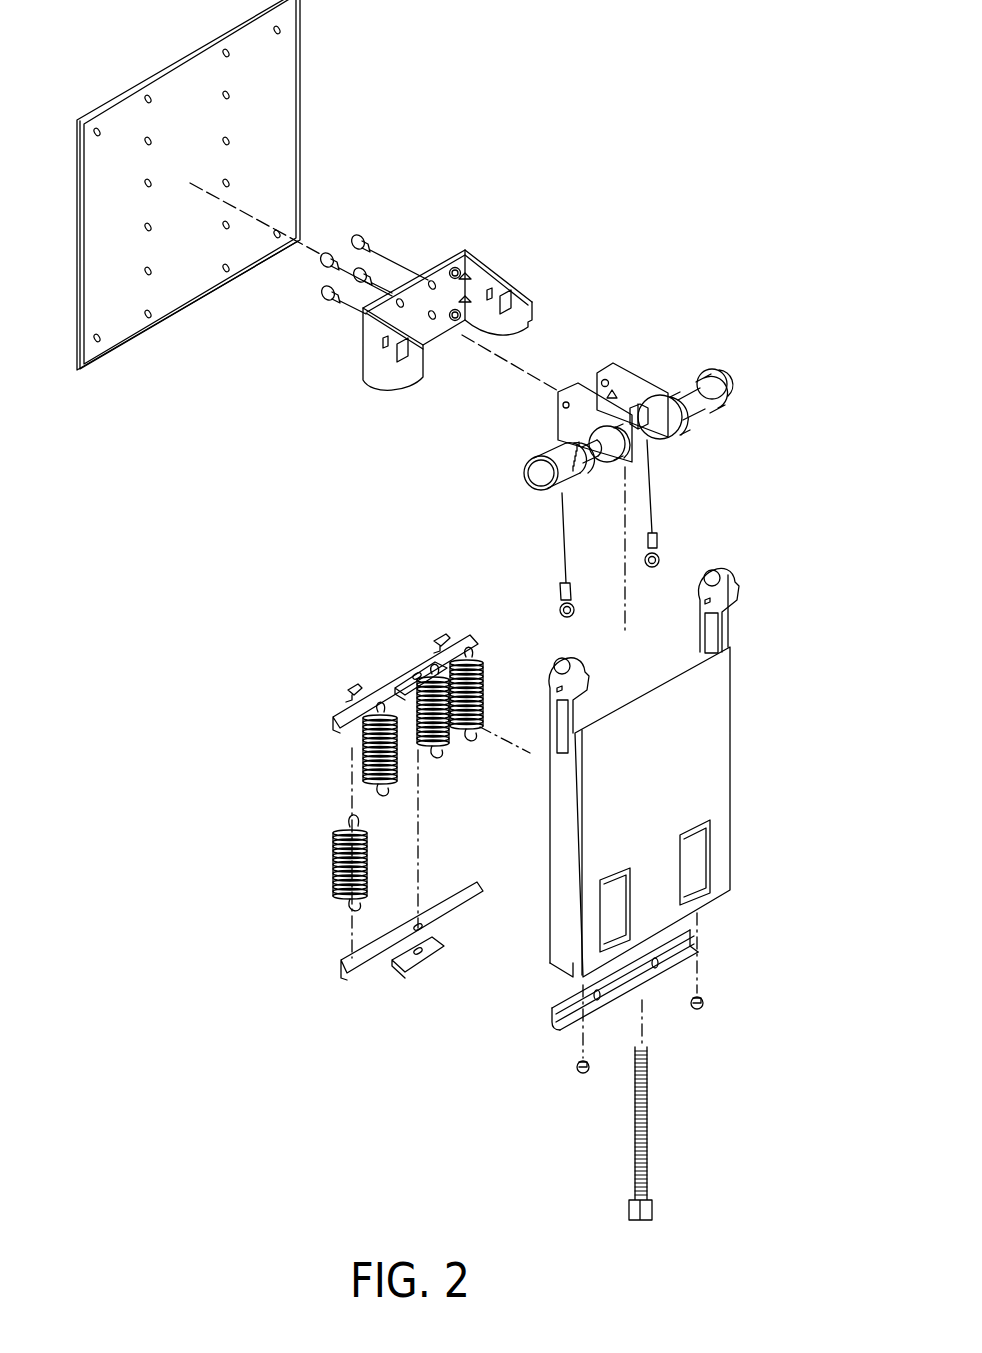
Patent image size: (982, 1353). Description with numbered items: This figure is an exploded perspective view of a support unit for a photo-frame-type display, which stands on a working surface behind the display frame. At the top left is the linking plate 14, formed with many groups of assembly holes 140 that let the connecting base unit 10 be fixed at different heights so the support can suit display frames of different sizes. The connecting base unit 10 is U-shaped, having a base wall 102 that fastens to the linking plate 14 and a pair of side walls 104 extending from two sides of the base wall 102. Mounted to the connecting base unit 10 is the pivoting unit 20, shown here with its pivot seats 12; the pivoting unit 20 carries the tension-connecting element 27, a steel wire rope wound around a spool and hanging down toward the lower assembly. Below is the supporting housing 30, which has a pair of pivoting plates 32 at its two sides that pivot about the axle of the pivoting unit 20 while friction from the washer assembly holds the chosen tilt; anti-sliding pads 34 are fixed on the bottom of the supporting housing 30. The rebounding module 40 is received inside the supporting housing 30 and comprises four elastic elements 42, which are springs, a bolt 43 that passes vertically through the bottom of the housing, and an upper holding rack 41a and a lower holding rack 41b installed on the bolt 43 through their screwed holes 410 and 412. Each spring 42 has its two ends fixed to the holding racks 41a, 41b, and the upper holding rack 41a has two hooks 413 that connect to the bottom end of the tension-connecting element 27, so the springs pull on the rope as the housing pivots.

The linking plate 14 is at (303, 58).
The assembly holes 140 is at (227, 272).
The connecting base unit 10 is at (439, 295).
The base wall 102 is at (415, 285).
The side walls 104 is at (487, 277).
The pivot plates 12 is at (625, 385).
The pivoting unit 20 is at (674, 350).
The tension-connecting element 27 is at (562, 546).
The supporting housing 30 is at (600, 894).
The pivoting plates 32 is at (702, 632).
The anti-sliding pads 34 is at (556, 1030).
The bolt 43 is at (648, 1127).
The rebounding module 40 is at (378, 813).
The upper holding rack 41a is at (342, 707).
The lower holding rack 41b is at (343, 982).
The screwed hole 410 is at (413, 670).
The screwed hole 412 is at (419, 985).
The hooks 413 is at (440, 640).
The elastic element 42 is at (368, 860).